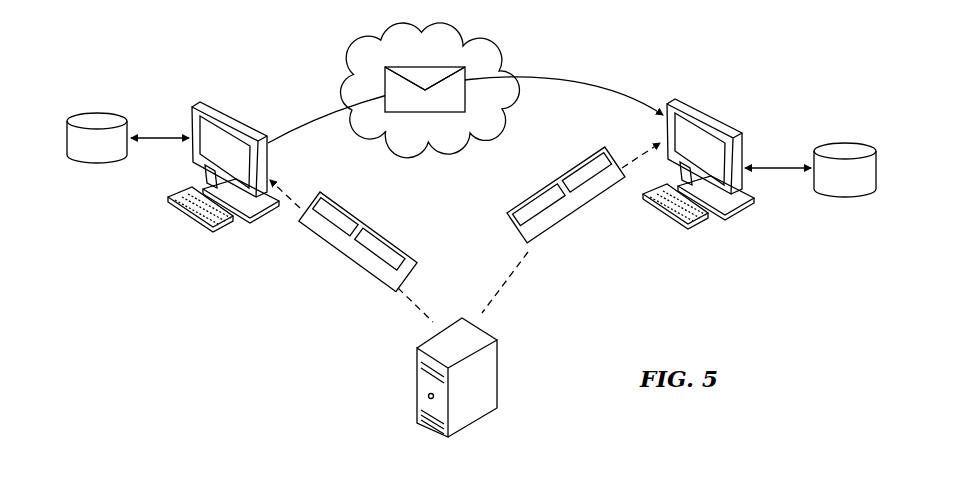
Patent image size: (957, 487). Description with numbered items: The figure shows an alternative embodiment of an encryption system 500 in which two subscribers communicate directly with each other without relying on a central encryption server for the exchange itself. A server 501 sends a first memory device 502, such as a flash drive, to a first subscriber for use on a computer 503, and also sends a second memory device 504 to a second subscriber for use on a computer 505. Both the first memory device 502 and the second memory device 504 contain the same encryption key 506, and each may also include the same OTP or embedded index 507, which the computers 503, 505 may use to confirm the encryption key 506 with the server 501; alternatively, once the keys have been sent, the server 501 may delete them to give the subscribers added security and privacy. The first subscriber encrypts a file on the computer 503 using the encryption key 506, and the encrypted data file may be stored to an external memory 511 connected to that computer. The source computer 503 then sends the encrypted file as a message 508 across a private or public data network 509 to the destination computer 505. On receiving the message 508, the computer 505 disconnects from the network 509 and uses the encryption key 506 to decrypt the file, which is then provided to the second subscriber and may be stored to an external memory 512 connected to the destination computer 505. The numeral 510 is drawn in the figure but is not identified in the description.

The encryption system 500 is at (141, 78).
The server 501 is at (465, 386).
The first memory device 502 is at (419, 262).
The computer 503 is at (215, 163).
The second memory device 504 is at (509, 222).
The computer 505 is at (688, 160).
The encryption key 506 is at (351, 201).
The OTP or embedded index 507 is at (396, 238).
The message 508 is at (433, 107).
The data network 509 is at (504, 54).
The email message 510 is at (396, 100).
The external memory 511 is at (87, 154).
The external memory 512 is at (835, 182).